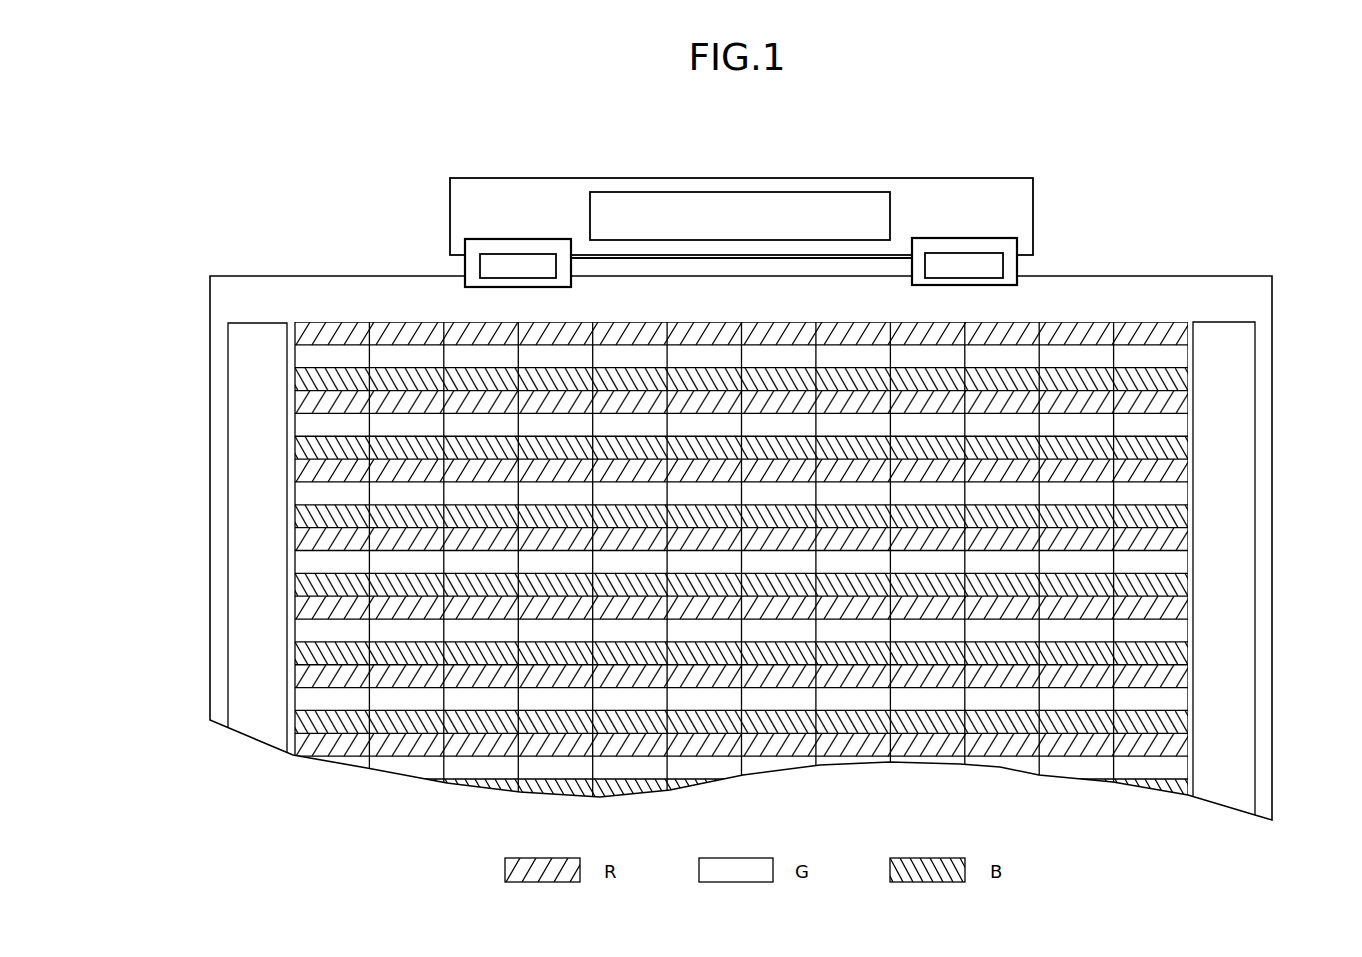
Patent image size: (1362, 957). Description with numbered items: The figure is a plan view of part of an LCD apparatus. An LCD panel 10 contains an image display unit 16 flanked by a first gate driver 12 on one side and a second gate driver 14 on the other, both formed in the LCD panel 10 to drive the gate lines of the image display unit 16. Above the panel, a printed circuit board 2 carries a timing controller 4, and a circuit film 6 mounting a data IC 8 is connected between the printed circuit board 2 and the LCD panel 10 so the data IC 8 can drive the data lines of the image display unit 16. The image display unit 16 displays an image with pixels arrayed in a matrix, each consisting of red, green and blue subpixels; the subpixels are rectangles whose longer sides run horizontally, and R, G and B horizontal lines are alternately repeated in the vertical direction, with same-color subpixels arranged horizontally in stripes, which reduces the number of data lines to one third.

The printed circuit board 2 is at (1033, 213).
The timing controller 4 is at (890, 205).
The circuit film 6 is at (455, 248).
The data IC 8 is at (480, 268).
The LCD panel 10 is at (1272, 350).
The first gate driver 12 is at (228, 410).
The second gate driver 14 is at (1255, 412).
The image display unit 16 is at (1143, 314).